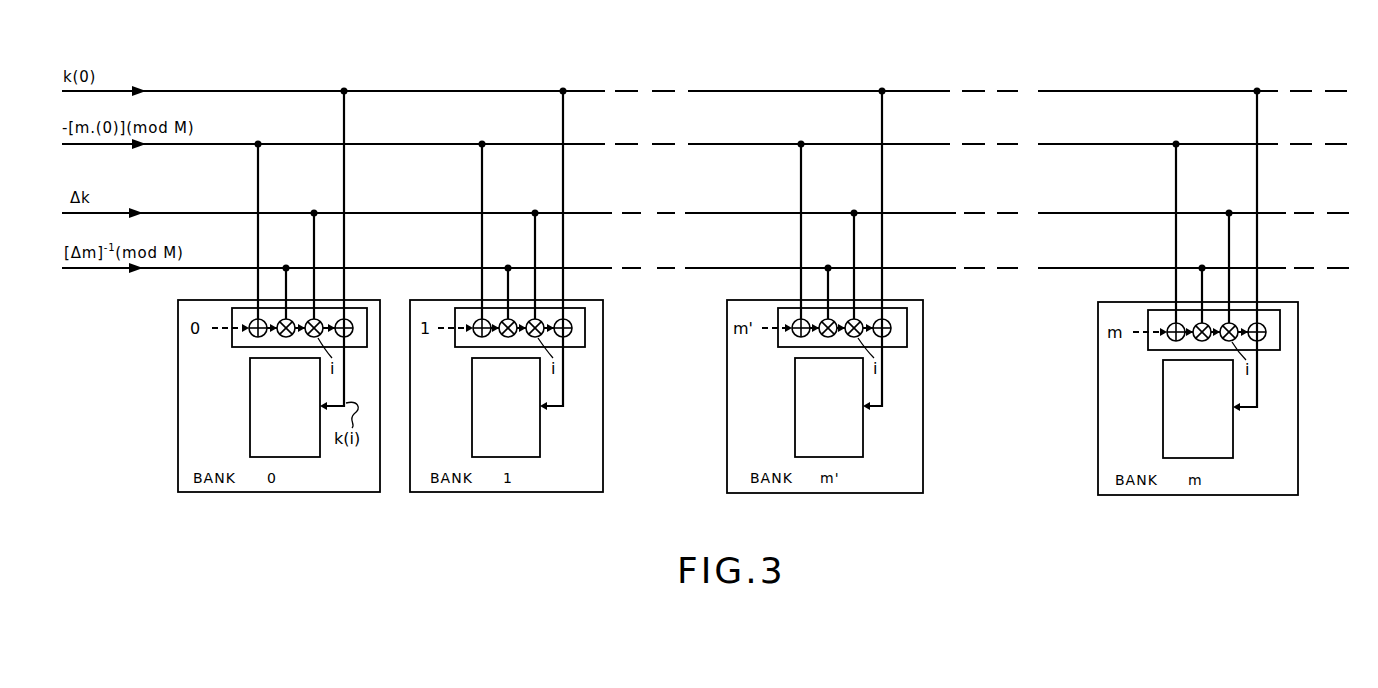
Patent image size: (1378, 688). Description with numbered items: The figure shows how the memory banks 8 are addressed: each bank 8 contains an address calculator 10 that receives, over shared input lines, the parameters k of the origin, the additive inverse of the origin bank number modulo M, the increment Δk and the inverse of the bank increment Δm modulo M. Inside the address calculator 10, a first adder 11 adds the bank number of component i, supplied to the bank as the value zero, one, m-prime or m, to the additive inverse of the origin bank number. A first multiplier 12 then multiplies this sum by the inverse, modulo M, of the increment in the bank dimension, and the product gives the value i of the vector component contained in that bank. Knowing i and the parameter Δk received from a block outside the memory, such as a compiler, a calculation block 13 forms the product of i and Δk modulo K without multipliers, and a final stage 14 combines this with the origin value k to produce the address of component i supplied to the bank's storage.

The bank 8 is at (178, 414).
The address calculator 10 is at (366, 346).
The first adder 11 is at (251, 335).
The first multiplier 12 is at (283, 338).
The calculation block 13 is at (320, 319).
The adder 14 is at (349, 322).